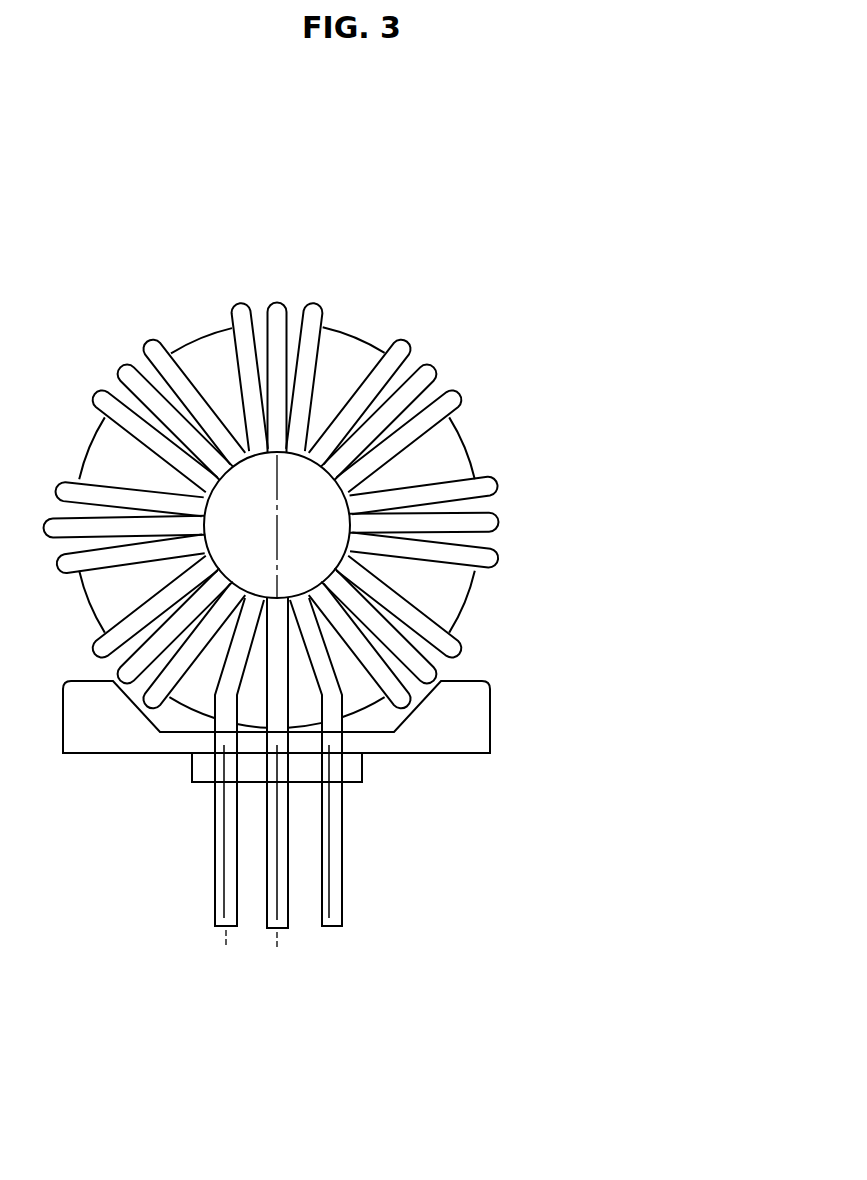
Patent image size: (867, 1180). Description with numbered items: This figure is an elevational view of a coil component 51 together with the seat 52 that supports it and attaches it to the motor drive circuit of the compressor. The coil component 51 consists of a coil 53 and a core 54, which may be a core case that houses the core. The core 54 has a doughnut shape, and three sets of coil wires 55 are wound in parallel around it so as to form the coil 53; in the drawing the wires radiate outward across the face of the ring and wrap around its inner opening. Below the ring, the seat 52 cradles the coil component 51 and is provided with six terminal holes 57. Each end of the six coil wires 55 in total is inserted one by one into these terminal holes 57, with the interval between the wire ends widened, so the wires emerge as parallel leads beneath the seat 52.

The coil component 51 is at (683, 295).
The seat 52 is at (473, 673).
The coil 53 is at (500, 482).
The core 54 is at (462, 427).
The coil wires 55 is at (342, 880).
The terminal holes 57 is at (207, 782).